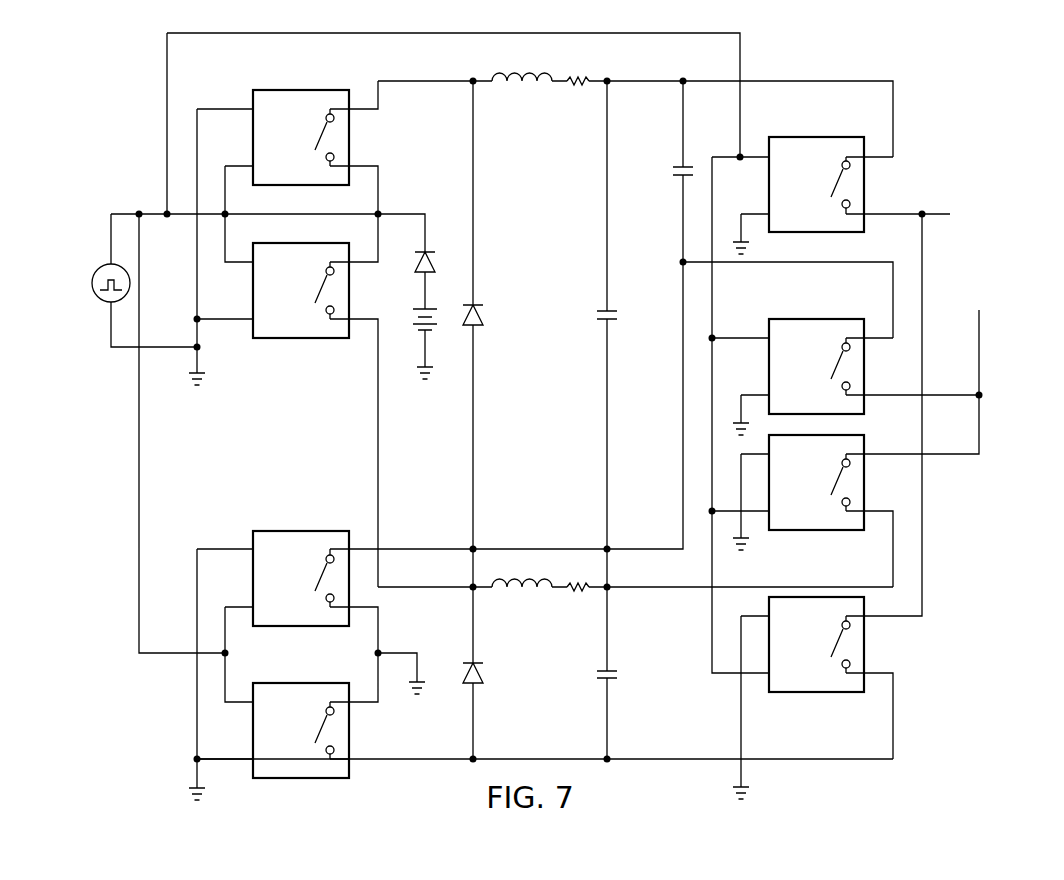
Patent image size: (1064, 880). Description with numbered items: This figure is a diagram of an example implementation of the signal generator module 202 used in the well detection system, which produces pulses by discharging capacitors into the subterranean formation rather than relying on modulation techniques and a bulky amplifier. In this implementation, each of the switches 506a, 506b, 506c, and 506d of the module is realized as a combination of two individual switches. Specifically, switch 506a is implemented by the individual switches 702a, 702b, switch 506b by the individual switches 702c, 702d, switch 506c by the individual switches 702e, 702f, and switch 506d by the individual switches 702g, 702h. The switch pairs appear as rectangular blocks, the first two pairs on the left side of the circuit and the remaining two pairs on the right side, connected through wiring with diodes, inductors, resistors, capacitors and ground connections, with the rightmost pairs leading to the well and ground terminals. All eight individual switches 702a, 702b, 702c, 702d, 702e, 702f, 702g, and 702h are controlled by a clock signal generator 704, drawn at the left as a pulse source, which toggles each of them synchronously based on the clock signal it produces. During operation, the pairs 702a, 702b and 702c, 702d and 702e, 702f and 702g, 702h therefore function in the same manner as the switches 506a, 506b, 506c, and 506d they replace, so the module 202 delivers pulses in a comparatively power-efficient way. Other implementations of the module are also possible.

The signal generator module 202 is at (1003, 78).
The switch 506a is at (231, 313).
The switch 506b is at (269, 507).
The switch 506c is at (844, 260).
The switch 506d is at (844, 617).
The individual switch 702a is at (300, 90).
The individual switch 702b is at (300, 243).
The individual switch 702c is at (282, 626).
The individual switch 702d is at (320, 683).
The individual switch 702e is at (817, 137).
The individual switch 702f is at (817, 319).
The individual switch 702g is at (817, 530).
The individual switch 702h is at (817, 692).
The clock signal generator 704 is at (92, 280).